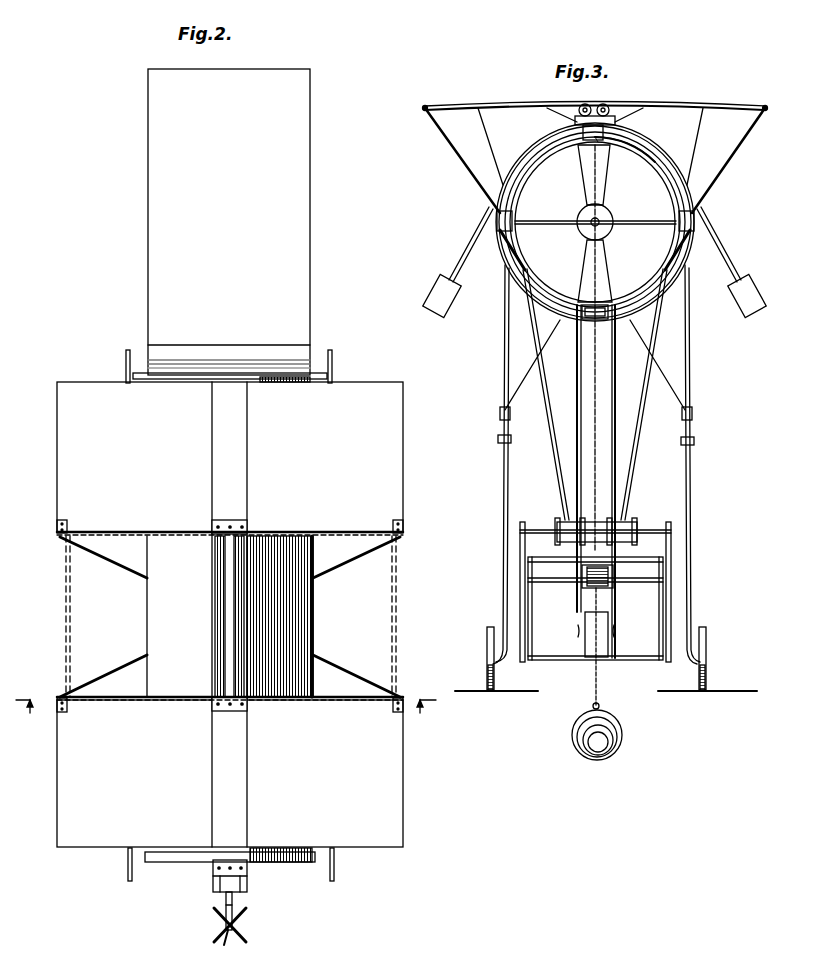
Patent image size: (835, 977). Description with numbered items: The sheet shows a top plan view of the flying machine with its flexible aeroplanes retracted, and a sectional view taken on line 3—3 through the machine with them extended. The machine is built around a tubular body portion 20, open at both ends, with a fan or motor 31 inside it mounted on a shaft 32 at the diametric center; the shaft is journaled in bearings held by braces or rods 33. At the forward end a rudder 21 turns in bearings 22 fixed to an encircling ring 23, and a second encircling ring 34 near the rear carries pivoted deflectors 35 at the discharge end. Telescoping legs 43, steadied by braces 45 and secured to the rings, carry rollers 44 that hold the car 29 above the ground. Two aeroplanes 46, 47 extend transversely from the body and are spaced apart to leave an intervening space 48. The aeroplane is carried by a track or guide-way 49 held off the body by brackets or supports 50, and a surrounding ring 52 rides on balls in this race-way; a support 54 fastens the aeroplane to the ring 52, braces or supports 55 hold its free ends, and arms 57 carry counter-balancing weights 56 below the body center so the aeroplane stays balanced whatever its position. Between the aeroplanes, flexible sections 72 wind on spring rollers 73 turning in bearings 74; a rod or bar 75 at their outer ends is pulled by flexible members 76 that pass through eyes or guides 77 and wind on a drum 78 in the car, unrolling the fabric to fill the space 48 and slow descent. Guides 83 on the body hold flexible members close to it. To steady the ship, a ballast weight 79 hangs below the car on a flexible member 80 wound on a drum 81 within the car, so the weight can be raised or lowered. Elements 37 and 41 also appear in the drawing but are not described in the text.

In FIG. 2, the section line 3- 3 is at (225, 700).
In FIG. 2, the tubular body portion 20 is at (312, 648).
In FIG. 3, the tubular body portion 20 is at (660, 280).
In FIG. 2, the rudder 21 is at (226, 895).
In FIG. 2, the bearings 22 is at (240, 862).
In FIG. 2, the encircling ring 23 is at (286, 856).
In FIG. 3, the car 29 is at (645, 656).
In FIG. 3, the fan or motor 31 is at (598, 160).
In FIG. 2, the shaft 32 is at (238, 912).
In FIG. 3, the shaft 32 is at (592, 220).
In FIG. 2, the braces or rods 33 is at (232, 940).
In FIG. 3, the braces or rods 33 is at (636, 220).
In FIG. 2, the encircling ring 34 is at (262, 382).
In FIG. 2, the deflectors 35 is at (178, 214).
In FIG. 3, the rod 37 is at (598, 470).
In FIG. 3, the weight block 41 is at (600, 640).
In FIG. 3, the legs 43 is at (500, 462).
In FIG. 2, the rollers 44 is at (126, 360).
In FIG. 3, the rollers 44 is at (487, 658).
In FIG. 3, the braces 45 is at (528, 362).
In FIG. 2, the aeroplane 46 is at (74, 802).
In FIG. 2, the aeroplane 47 is at (82, 466).
In FIG. 3, the aeroplane 47 is at (700, 104).
In FIG. 2, the intervening space 48 is at (108, 608).
In FIG. 3, the track or guide-way 49 is at (512, 188).
In FIG. 3, the brackets or supports 50 is at (582, 130).
In FIG. 3, the ring 52 is at (652, 150).
In FIG. 3, the support 54 is at (616, 118).
In FIG. 3, the braces or supports 55 is at (490, 146).
In FIG. 3, the counter-balancing weights 56 is at (436, 292).
In FIG. 3, the arms 57 is at (462, 256).
In FIG. 2, the flexible aeroplane sections 72 is at (216, 538).
In FIG. 3, the spring rollers 73 is at (583, 104).
In FIG. 2, the bearings 74 is at (242, 524).
In FIG. 2, the rod or bar 75 is at (212, 596).
In FIG. 3, the rod or bar 75 is at (500, 104).
In FIG. 2, the flexible members 76 is at (137, 540).
In FIG. 3, the flexible members 76 is at (443, 150).
In FIG. 2, the eyes or guides 77 is at (60, 538).
In FIG. 3, the drum 78 is at (628, 522).
In FIG. 3, the ballast weight 79 is at (618, 730).
In FIG. 3, the flexible member 80 is at (594, 680).
In FIG. 3, the drum 81 is at (592, 590).
In FIG. 3, the guides 83 is at (522, 268).